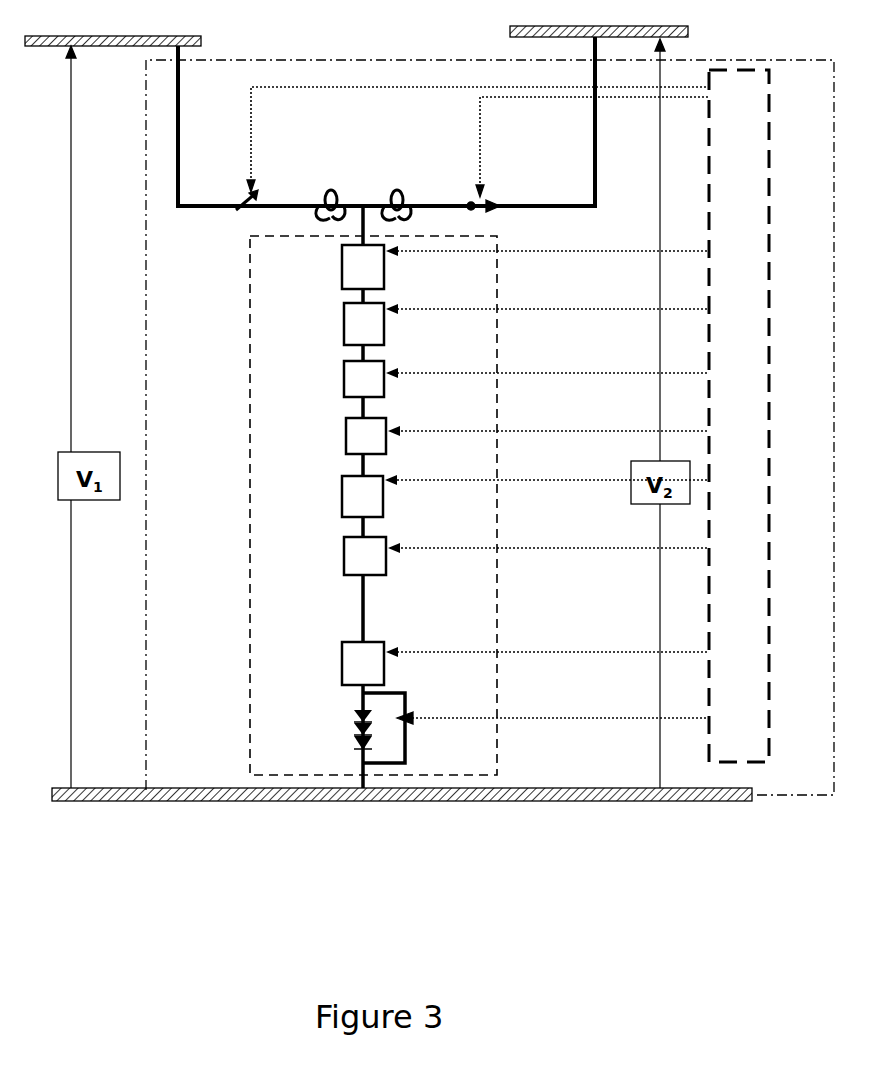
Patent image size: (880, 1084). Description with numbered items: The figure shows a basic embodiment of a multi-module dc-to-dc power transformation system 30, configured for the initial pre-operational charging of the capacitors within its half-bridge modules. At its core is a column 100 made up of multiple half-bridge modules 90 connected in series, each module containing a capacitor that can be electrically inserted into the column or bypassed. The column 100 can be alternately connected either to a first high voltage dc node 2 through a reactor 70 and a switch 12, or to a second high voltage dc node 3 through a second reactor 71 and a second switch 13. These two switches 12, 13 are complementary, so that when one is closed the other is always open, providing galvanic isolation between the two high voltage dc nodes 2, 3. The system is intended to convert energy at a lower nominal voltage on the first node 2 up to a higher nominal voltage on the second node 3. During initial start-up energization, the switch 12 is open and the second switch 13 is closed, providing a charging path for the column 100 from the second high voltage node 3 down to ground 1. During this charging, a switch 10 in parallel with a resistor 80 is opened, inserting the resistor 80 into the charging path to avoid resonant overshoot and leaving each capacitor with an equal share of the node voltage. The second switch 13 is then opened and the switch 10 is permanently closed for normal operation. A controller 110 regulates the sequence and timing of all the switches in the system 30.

The ground 1 is at (186, 803).
The first high voltage dc node 2 is at (108, 36).
The second high voltage dc node 3 is at (638, 26).
The switch 10 is at (396, 716).
The switch 12 is at (242, 198).
The second switch 13 is at (492, 200).
The multi-module dc-to-dc power transformation system 30 is at (148, 182).
The reactor 70 is at (346, 192).
The second reactor 71 is at (408, 190).
The resistor 80 is at (348, 732).
The half-bridge modules 90 is at (525, 465).
The column 100 is at (497, 356).
The controller 110 is at (752, 70).